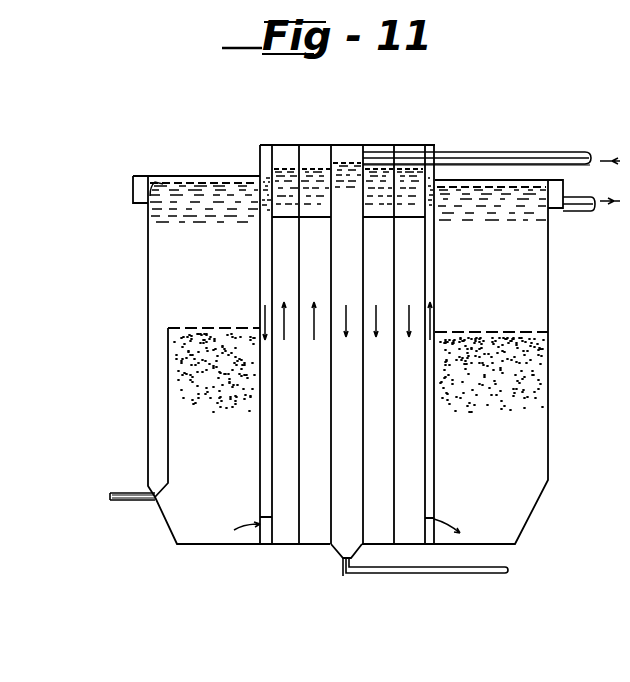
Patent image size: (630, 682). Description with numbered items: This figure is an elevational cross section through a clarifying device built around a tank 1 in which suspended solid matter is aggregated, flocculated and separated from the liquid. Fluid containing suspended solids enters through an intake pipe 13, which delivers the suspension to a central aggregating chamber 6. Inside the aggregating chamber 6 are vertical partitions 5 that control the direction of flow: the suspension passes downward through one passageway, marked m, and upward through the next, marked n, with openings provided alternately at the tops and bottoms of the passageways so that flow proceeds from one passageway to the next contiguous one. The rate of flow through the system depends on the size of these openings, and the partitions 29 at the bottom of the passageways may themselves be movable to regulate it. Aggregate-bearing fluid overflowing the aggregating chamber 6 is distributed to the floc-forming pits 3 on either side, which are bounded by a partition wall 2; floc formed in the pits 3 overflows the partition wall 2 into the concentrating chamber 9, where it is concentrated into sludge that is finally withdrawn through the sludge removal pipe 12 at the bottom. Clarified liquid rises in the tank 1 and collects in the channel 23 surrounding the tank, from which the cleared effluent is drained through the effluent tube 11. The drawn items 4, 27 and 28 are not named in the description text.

The tank 1 is at (549, 265).
The partition wall 2 is at (437, 247).
The floc-forming pits 3 is at (174, 414).
The liquid 4 is at (158, 249).
The partitions 5 is at (293, 234).
The aggregating chamber 6 is at (345, 150).
The concentrating chamber 9 is at (148, 437).
The cleared effluent tube 11 is at (578, 212).
The sludge removal pipe 12 is at (516, 556).
The intake pipe 13 is at (497, 150).
The channel 23 is at (131, 180).
The side discharge pipe 27 is at (126, 495).
The narrow channels 28 is at (261, 250).
The partitions 29 is at (262, 541).